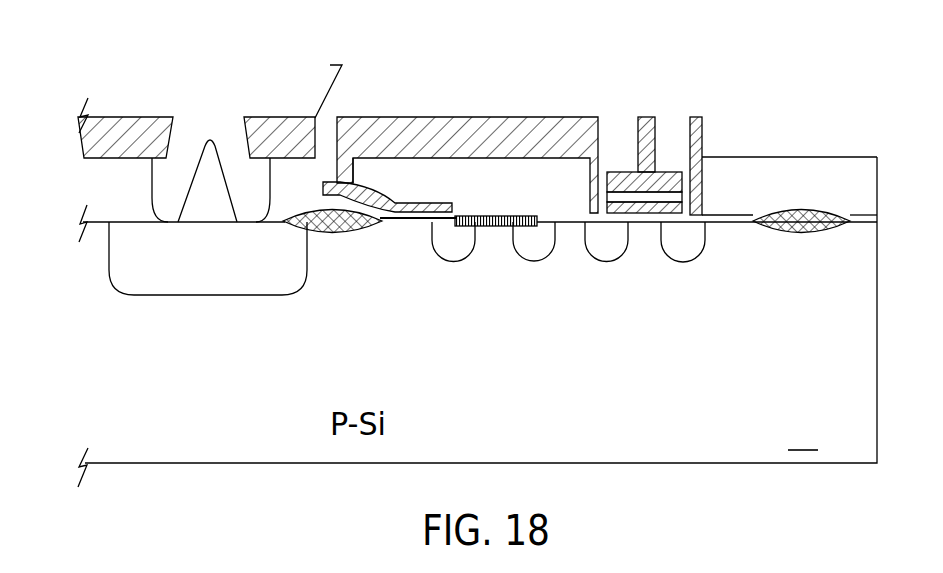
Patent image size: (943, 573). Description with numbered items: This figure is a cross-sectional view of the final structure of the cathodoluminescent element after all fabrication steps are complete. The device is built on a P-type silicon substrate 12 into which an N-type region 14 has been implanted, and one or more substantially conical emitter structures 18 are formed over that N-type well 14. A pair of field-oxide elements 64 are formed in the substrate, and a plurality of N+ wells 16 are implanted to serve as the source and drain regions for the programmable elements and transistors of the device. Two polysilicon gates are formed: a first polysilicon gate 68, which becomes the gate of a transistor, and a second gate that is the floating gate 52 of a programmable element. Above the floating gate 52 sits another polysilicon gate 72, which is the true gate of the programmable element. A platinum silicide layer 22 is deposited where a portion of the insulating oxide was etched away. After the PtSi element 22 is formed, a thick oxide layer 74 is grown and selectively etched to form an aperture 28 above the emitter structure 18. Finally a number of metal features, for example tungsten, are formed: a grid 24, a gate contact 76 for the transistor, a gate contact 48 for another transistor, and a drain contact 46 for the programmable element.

The P-type silicon substrate 12 is at (477, 292).
The N-type region 14 is at (208, 286).
The N+ wells 16 is at (573, 264).
The conical emitter structure 18 is at (222, 214).
The platinum silicide layer 22 is at (496, 196).
The grid 24 is at (196, 106).
The aperture 28 is at (187, 79).
The drain contact 46 is at (787, 166).
The gate contact 48 is at (637, 103).
The floating gate 52 is at (644, 276).
The field-oxide elements 64 is at (566, 246).
The polysilicon gate 68 is at (389, 260).
The polysilicon gate 72 is at (701, 147).
The thick oxide layer 74 is at (386, 120).
The gate contact 76 is at (467, 129).